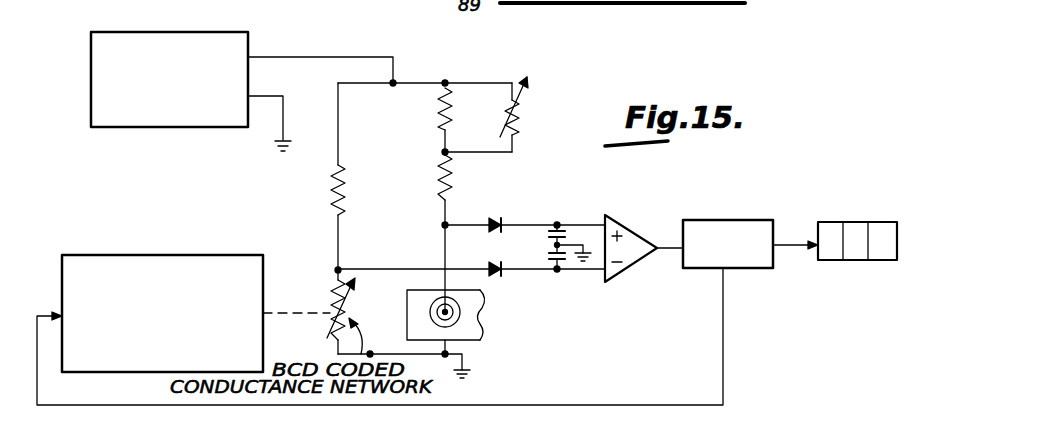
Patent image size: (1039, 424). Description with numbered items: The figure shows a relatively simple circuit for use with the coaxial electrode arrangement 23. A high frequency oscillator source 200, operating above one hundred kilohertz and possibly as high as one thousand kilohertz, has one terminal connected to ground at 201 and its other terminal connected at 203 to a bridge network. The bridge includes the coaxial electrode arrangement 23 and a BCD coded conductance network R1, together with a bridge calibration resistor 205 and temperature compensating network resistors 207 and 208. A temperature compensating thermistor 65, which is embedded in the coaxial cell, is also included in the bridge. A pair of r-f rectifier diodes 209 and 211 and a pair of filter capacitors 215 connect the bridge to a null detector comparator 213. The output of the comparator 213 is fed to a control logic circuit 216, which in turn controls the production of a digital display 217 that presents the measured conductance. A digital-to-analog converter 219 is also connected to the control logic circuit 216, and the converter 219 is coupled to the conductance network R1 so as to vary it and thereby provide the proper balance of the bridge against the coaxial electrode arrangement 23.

The high frequency oscillator source 200 is at (238, 31).
The ground 201 is at (278, 143).
The bridge network connection 203 is at (394, 82).
The bridge calibration resistor 205 is at (333, 178).
The temperature compensating network resistor 207 is at (440, 109).
The temperature compensating network resistor 208 is at (440, 173).
The temperature compensating thermistor 65 is at (516, 120).
The r-f rectifier diode 209 is at (503, 219).
The r-f rectifier diode 211 is at (497, 263).
The filter capacitor 215 is at (562, 232).
The null detector comparator 213 is at (623, 217).
The control logic circuit 216 is at (738, 219).
The digital display 217 is at (876, 221).
The digital-to-analog converter 219 is at (155, 254).
The BCD coded conductance network R1 is at (331, 291).
The coaxial electrode arrangement 23 is at (456, 316).